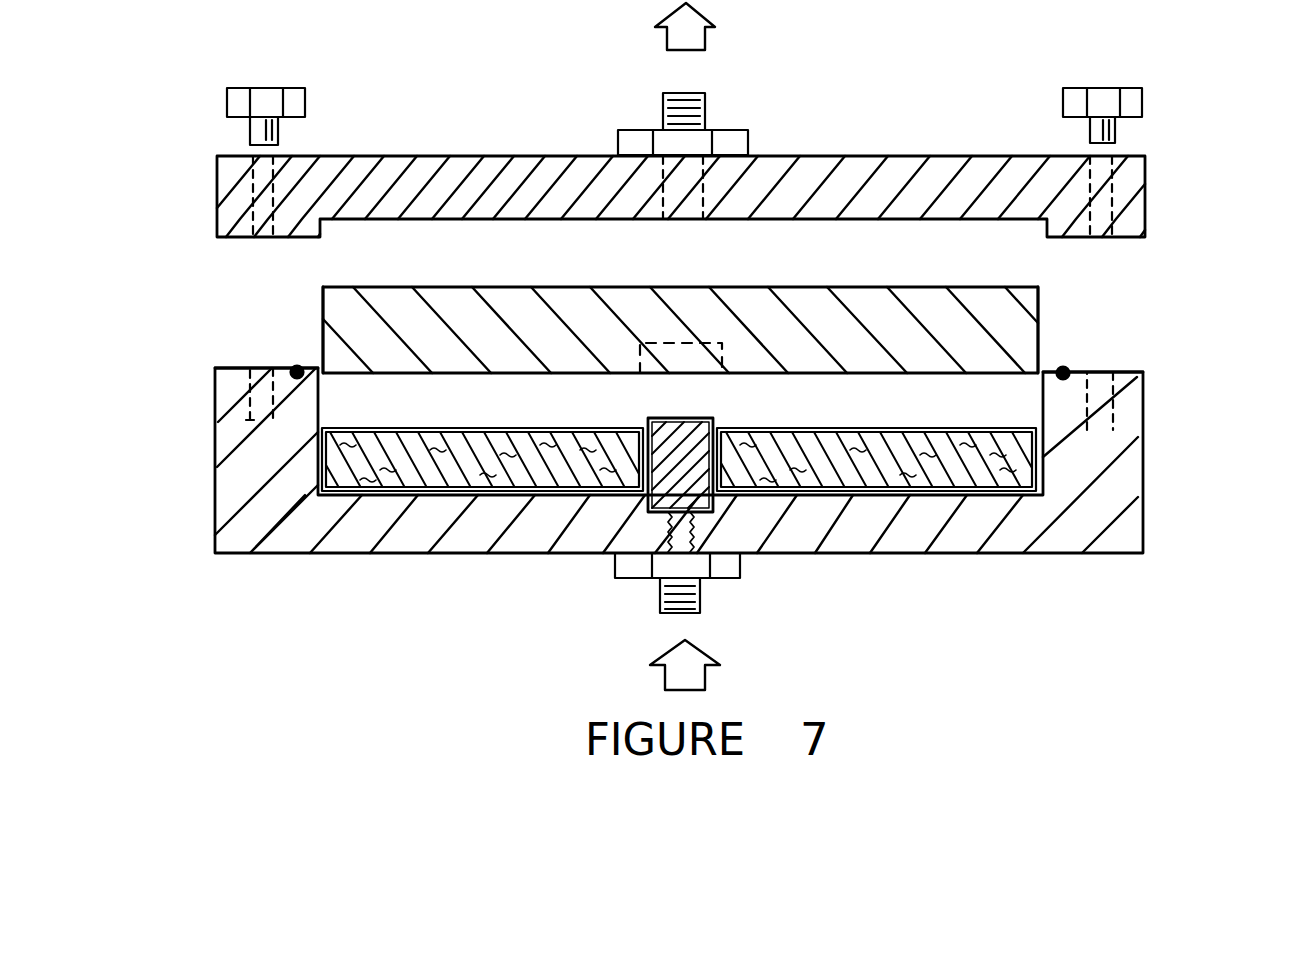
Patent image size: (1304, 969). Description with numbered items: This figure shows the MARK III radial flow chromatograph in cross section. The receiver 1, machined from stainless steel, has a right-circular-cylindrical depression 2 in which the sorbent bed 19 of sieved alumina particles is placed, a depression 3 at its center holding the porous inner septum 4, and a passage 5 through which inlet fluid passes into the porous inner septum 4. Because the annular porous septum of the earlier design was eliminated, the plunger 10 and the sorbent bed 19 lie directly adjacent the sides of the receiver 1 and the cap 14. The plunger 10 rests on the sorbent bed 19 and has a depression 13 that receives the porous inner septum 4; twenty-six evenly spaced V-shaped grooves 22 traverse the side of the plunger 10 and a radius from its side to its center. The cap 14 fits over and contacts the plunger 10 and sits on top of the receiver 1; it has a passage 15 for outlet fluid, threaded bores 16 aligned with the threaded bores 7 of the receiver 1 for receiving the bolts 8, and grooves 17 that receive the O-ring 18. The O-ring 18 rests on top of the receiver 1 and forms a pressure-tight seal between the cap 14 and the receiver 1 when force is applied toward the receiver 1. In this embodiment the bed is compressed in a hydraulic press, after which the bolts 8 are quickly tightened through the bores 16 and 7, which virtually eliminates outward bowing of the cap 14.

The receiver 1 is at (1013, 528).
The right-circular-cylindrical depression 2 is at (343, 408).
The depression for holding porous inner septum 3 is at (645, 507).
The porous inner septum 4 is at (690, 480).
The passage for inlet fluid 5 is at (655, 597).
The threaded bores 7 is at (222, 412).
The bolts 8 is at (238, 100).
The plunger 10 is at (422, 322).
The depression for receiving porous inner septum 13 is at (720, 347).
The cap 14 is at (372, 165).
The passage for outlet fluid 15 is at (703, 97).
The threaded bores 16 is at (262, 193).
The grooves for receiving O-ring 17 is at (215, 378).
The O-ring 18 is at (293, 366).
The sorbent bed 19 is at (565, 430).
The grooves 22 is at (323, 303).